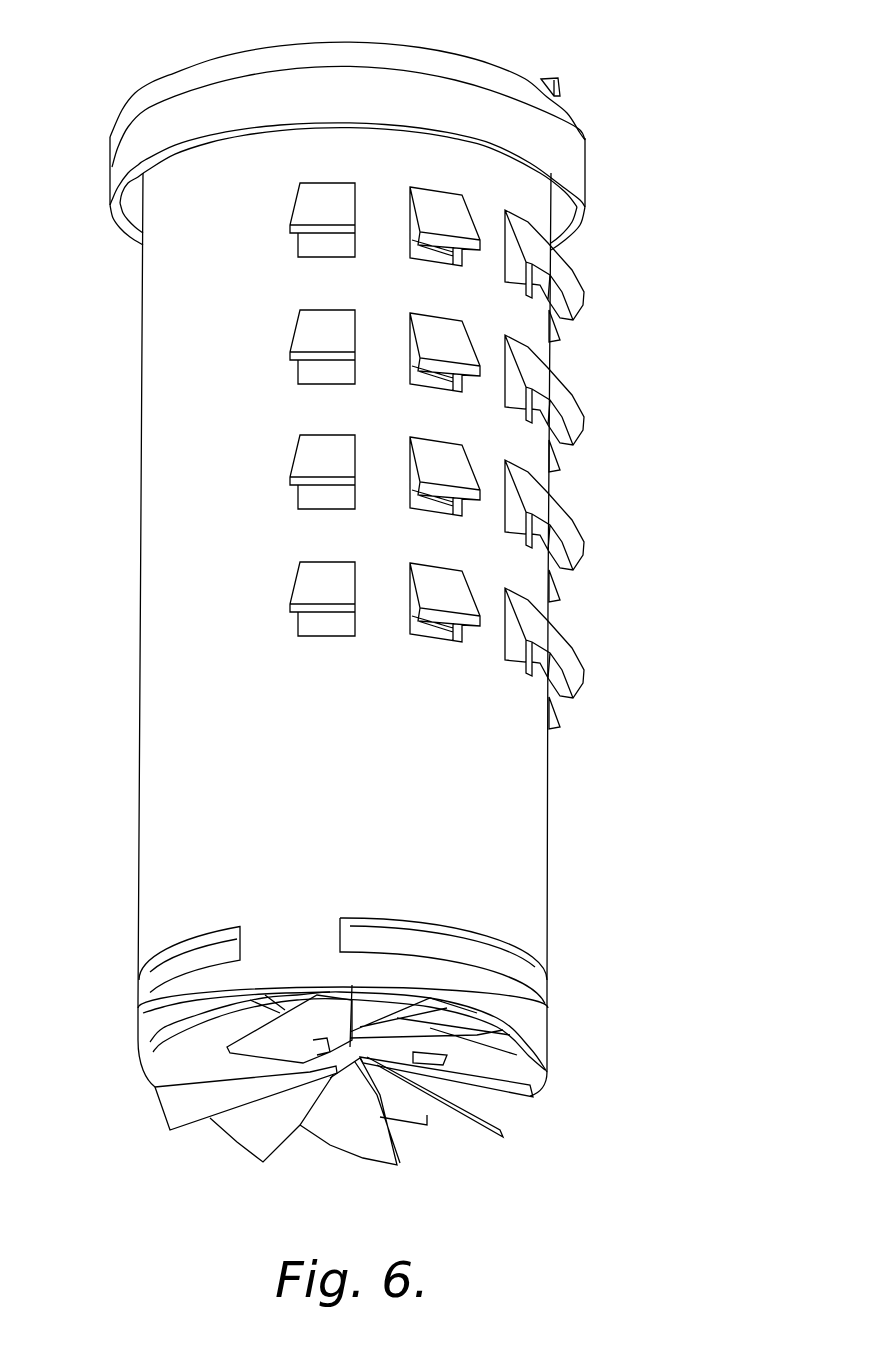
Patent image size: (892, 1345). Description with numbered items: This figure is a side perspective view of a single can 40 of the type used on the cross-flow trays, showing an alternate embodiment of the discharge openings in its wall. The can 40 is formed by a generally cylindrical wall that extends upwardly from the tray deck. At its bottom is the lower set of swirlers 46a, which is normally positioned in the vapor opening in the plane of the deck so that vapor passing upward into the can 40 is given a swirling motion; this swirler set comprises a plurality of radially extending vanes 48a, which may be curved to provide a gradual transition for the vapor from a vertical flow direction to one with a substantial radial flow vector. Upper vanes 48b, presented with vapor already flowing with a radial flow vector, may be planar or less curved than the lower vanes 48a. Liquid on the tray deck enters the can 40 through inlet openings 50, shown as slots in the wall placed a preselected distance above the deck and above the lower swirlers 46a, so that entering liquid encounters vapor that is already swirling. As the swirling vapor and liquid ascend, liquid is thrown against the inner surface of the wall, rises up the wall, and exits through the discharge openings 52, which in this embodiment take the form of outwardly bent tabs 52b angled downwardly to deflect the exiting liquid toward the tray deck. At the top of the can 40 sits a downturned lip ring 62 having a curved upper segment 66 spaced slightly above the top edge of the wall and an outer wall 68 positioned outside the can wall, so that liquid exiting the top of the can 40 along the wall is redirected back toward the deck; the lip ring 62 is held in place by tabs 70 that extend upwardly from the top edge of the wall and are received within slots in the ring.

The curved upper segment 66 is at (466, 52).
The tabs 70 is at (560, 83).
The downturned lip ring 62 is at (588, 150).
The outer wall 68 is at (575, 208).
The discharge openings 52 is at (481, 456).
The outwardly bent tabs 52b is at (530, 498).
The can 40 is at (547, 773).
The upper vanes 48b is at (368, 926).
The inlet openings 50 is at (540, 987).
The lower vanes 48a is at (503, 1133).
The lower set of swirlers 46a is at (320, 1037).